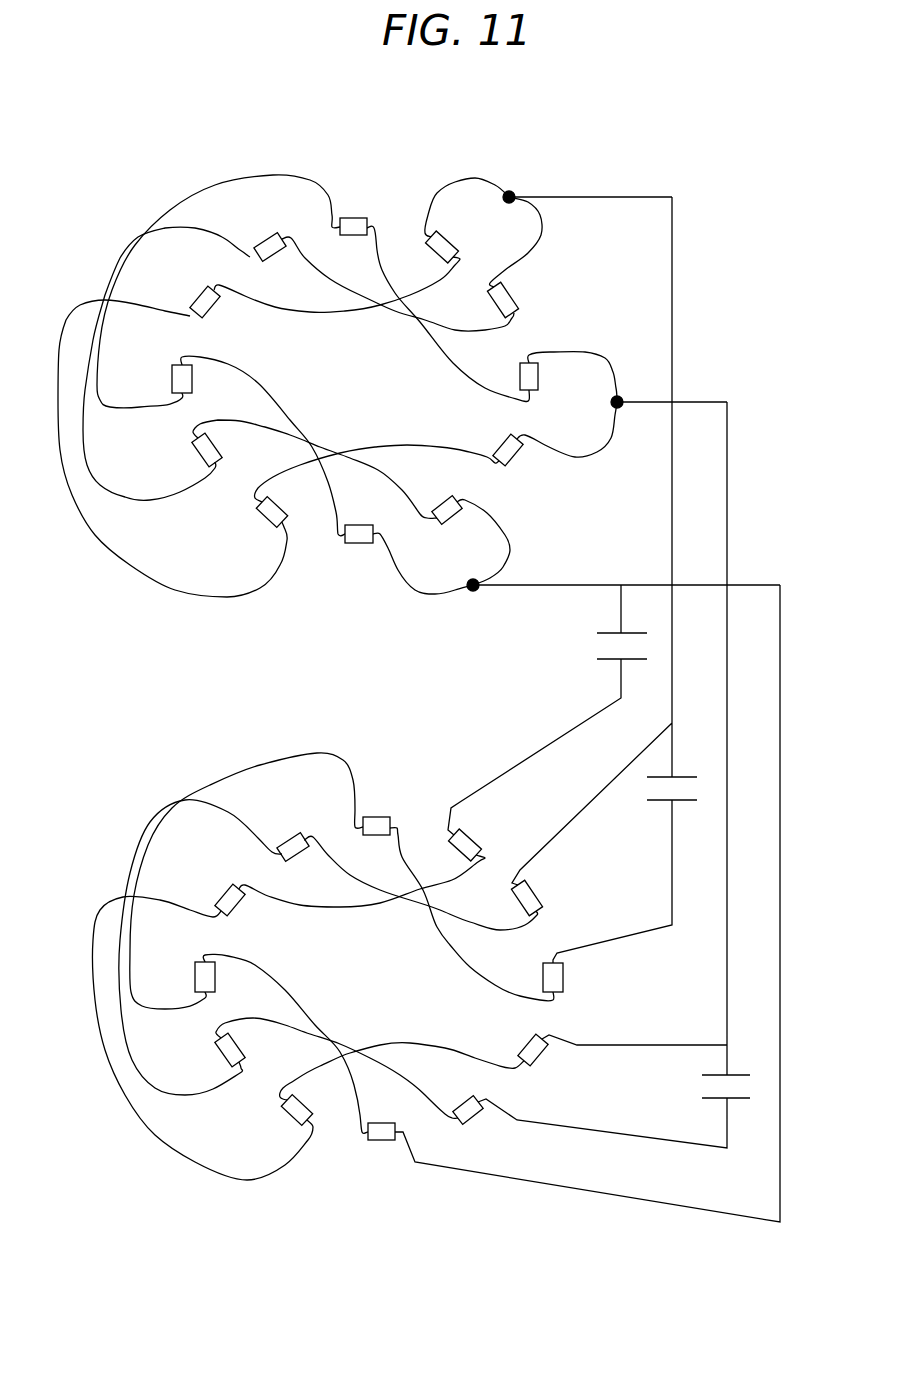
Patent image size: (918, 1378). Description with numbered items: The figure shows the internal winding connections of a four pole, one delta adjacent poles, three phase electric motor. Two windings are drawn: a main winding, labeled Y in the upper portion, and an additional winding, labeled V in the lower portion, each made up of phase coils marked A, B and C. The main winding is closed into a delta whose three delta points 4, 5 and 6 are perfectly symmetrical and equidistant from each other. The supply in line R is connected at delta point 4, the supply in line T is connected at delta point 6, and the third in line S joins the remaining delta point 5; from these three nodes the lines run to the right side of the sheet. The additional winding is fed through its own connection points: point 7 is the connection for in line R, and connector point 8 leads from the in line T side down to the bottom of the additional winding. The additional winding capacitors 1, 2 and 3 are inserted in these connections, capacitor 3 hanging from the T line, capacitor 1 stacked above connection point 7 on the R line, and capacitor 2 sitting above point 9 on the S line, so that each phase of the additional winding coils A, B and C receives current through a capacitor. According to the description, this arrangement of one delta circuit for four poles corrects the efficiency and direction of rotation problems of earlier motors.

The additional winding capacitor 1 is at (611, 541).
The additional winding capacitor 2 is at (653, 738).
The additional winding capacitor 3 is at (553, 710).
The delta point 4 is at (483, 232).
The delta point 5 is at (567, 405).
The delta point 6 is at (441, 546).
The connection point 7 is at (631, 881).
The connector point 8 is at (607, 903).
The capacitor 9 is at (622, 1123).
The phase A coil resistor A is at (367, 681).
The phase B coil resistor B is at (369, 678).
The phase C coil resistor C is at (367, 677).
The in line R is at (587, 177).
The terminal S is at (669, 383).
The in line T is at (623, 572).
The Y winding Y is at (293, 386).
The V winding V is at (323, 966).